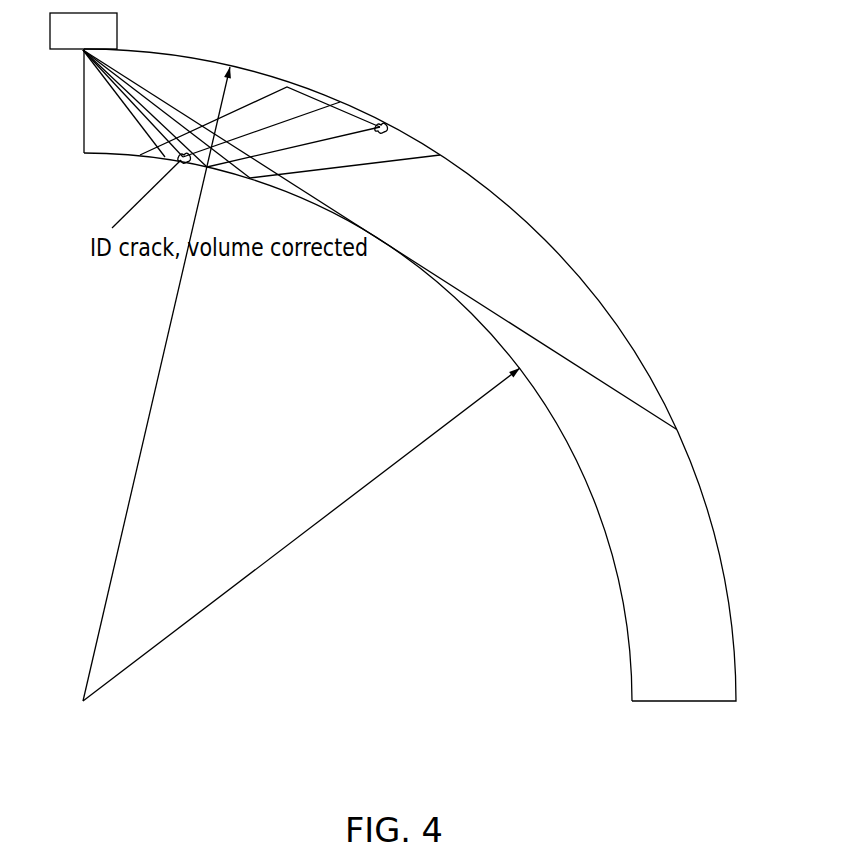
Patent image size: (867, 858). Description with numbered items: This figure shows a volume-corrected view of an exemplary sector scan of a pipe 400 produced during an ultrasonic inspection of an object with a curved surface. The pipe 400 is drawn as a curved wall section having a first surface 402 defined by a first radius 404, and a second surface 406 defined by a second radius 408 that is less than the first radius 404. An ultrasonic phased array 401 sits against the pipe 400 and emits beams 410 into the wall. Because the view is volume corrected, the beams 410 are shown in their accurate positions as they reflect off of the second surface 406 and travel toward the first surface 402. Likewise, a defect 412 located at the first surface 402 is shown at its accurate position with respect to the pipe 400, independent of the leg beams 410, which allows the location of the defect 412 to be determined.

The pipe 400 is at (432, 375).
The ultrasonic phased array 401 is at (118, 23).
The first surface 402 is at (432, 375).
The first radius 404 is at (155, 405).
The second surface 406 is at (568, 440).
The second radius 408 is at (332, 515).
The beams 410 is at (378, 106).
The defect 412 is at (386, 122).